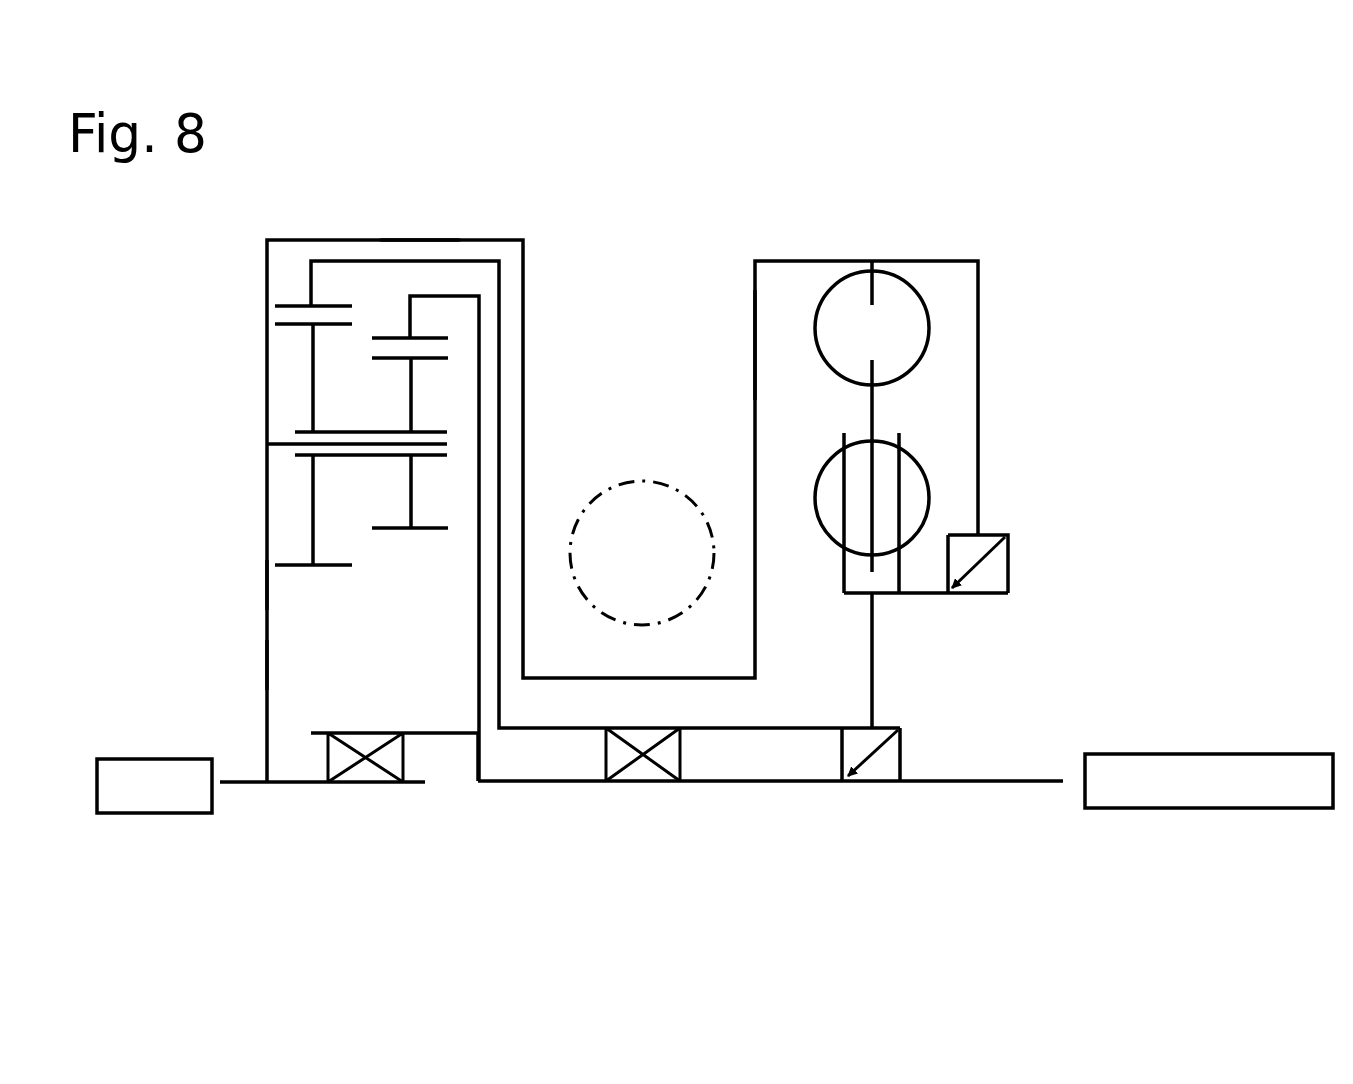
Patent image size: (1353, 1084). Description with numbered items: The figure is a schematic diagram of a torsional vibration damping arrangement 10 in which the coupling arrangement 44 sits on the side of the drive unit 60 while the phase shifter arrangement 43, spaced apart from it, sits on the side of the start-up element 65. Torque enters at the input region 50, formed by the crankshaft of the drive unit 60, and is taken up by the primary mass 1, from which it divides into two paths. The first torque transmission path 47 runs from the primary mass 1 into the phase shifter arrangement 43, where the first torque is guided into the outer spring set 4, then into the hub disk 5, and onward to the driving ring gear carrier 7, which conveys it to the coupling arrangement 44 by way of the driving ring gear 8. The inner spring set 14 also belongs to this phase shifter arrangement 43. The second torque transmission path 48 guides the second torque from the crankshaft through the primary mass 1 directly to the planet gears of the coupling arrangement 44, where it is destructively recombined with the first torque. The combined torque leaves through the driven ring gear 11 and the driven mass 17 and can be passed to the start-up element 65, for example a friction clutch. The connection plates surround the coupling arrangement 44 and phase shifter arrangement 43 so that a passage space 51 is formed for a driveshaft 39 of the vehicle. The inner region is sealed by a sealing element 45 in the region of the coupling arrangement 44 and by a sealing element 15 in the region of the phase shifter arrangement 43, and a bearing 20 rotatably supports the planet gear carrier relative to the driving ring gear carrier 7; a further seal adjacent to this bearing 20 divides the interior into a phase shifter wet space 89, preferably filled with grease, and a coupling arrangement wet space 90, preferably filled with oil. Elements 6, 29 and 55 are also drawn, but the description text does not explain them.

The primary mass 1 is at (267, 276).
The outer spring set 4 is at (930, 319).
The hub disk 5 is at (873, 407).
The gear wheel bearing 6 is at (846, 440).
The driving ring gear carrier 7 is at (872, 658).
The driving ring gear 8 is at (333, 303).
The torsional vibration damping arrangement 10 is at (641, 174).
The driven ring gear 11 is at (437, 338).
The inner spring set 14 is at (1012, 478).
The sealing element 15 is at (890, 757).
The driven mass 17 is at (783, 781).
The bearing 20 is at (645, 770).
The input bearing 29 is at (366, 768).
The driveshaft 39 is at (657, 540).
The phase shifter arrangement 43 is at (927, 277).
The coupling arrangement 44 is at (290, 375).
The sealing element 45 is at (988, 581).
The first torque transmission path 47 is at (420, 234).
The second torque transmission path 48 is at (267, 583).
The input region 50 is at (280, 790).
The passage space 51 is at (611, 428).
The output 55 is at (973, 816).
The drive unit 60 is at (154, 786).
The start-up element 65 is at (1209, 781).
The phase shifter wet space 89 is at (782, 335).
The coupling arrangement wet space 90 is at (348, 660).